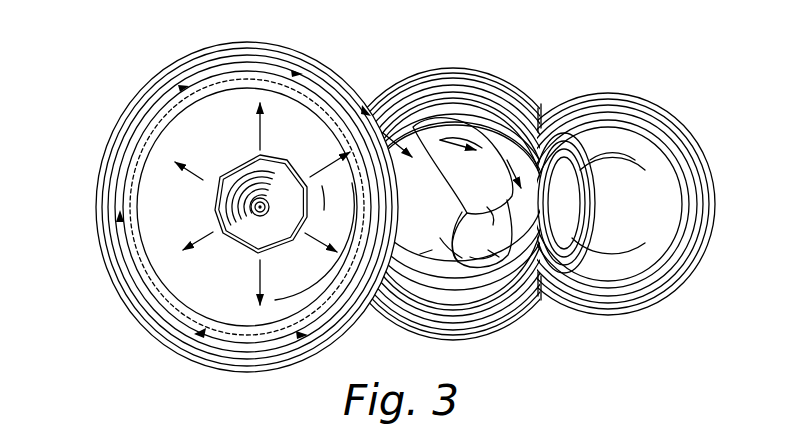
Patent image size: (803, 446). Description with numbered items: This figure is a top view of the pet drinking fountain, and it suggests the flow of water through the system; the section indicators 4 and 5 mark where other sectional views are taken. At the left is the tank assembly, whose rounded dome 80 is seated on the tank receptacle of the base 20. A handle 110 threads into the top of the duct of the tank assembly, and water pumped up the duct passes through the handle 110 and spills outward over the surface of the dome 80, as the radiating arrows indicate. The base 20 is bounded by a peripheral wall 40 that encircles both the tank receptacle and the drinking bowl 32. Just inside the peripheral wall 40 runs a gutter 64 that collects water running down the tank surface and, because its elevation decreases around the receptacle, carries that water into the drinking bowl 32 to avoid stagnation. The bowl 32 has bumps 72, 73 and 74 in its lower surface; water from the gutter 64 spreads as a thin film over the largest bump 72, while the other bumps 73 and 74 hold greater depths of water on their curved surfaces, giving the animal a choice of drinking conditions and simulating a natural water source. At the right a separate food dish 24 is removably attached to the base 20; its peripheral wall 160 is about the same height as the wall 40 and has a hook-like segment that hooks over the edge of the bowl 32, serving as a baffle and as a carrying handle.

The base 20 is at (453, 201).
The food dish 24 is at (622, 172).
The drinking bowl 32 is at (488, 68).
The peripheral wall 40 is at (228, 216).
The gutter 64 is at (177, 317).
The dome 80 is at (180, 275).
The bump 73 is at (477, 137).
The bump 72 is at (427, 253).
The bump 74 is at (493, 253).
The handle 110 is at (277, 180).
The peripheral wall 160 is at (680, 140).
The section line 4- 4 is at (92, 207).
The section line 5- 5 is at (137, 80).